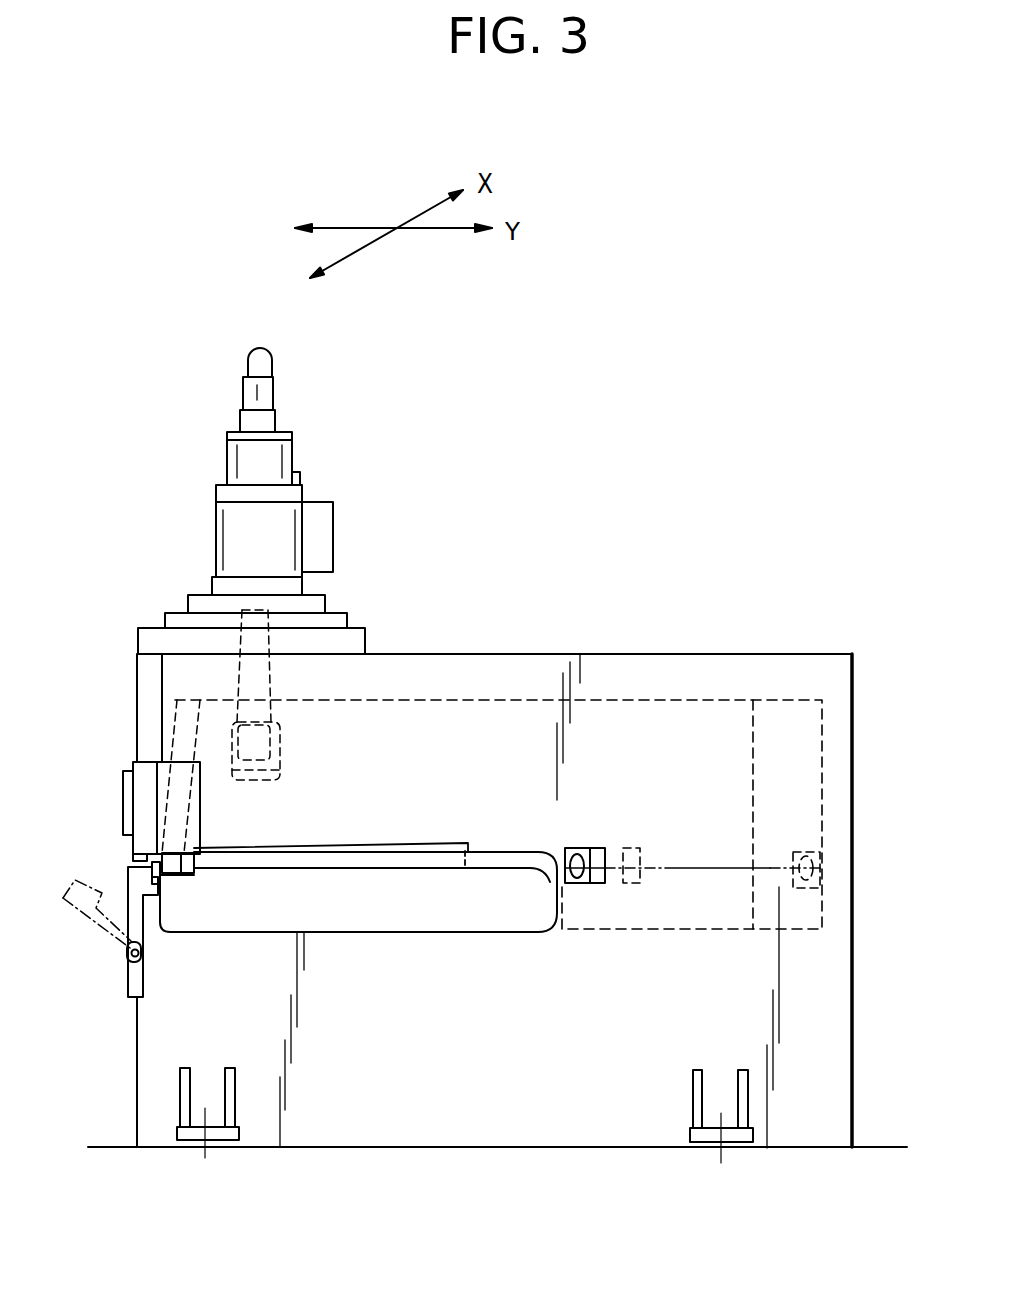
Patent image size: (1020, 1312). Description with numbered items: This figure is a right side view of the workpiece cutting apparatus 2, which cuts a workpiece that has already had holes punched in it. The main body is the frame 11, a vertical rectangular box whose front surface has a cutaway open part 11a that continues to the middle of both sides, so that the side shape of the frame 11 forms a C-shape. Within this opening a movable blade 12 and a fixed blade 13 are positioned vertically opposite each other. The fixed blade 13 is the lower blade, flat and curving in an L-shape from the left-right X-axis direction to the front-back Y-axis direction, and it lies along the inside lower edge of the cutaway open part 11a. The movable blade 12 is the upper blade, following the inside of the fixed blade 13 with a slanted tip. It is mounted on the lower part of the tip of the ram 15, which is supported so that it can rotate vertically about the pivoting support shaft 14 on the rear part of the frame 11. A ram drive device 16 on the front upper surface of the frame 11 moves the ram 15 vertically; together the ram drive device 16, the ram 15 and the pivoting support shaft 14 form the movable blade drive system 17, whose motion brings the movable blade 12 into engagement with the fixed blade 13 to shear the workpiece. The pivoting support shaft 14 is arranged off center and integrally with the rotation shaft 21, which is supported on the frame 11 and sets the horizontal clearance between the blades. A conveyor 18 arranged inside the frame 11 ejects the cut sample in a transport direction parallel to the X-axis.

The workpiece cutting apparatus 2 is at (668, 390).
The frame 11 is at (754, 654).
The cutaway open part 11a is at (352, 926).
The movable blade 12 is at (156, 855).
The fixed blade 13 is at (152, 876).
The pivoting support shaft 14 is at (687, 868).
The ram 15 is at (507, 700).
The ram drive device 16 is at (288, 533).
The movable blade drive system 17 is at (628, 522).
The conveyor 18 is at (422, 843).
The rotation shaft 21 is at (572, 878).